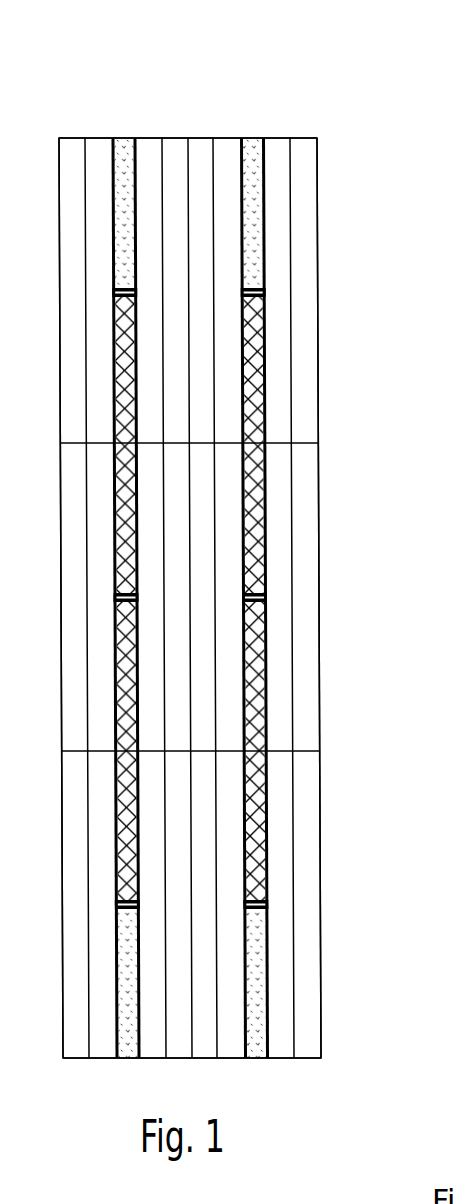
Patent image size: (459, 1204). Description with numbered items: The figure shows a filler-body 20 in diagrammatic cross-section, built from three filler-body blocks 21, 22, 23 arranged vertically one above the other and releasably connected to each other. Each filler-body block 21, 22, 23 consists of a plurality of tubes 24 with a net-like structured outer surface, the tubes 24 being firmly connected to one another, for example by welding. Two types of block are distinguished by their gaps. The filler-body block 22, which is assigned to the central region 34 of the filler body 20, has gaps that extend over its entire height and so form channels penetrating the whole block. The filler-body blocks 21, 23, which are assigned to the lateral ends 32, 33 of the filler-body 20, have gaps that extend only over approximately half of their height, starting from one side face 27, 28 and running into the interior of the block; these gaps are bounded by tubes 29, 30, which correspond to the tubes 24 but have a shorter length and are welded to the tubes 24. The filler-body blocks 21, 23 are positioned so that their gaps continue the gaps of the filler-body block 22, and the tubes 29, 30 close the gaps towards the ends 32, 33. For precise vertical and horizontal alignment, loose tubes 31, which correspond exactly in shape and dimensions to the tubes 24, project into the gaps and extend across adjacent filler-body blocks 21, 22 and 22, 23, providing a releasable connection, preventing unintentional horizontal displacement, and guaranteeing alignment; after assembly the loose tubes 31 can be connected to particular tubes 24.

The filler-body 20 is at (189, 102).
The filler-body block 21 is at (345, 301).
The filler-body block 22 is at (347, 612).
The filler-body block 23 is at (348, 954).
The tubes 24 is at (178, 160).
The side face 27 is at (187, 435).
The side face 28 is at (209, 760).
The tubes 29 is at (262, 225).
The tubes 30 is at (260, 990).
The loose tubes 31 is at (130, 356).
The lateral end 32 is at (336, 169).
The lateral end 33 is at (338, 1048).
The central region 34 is at (360, 579).